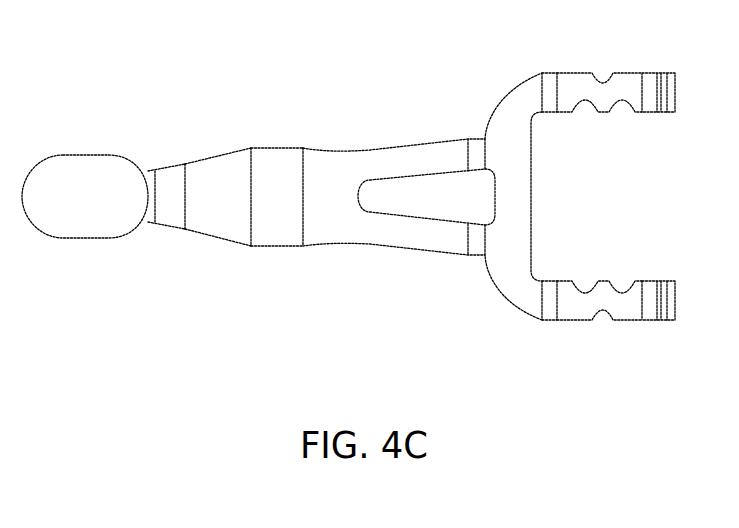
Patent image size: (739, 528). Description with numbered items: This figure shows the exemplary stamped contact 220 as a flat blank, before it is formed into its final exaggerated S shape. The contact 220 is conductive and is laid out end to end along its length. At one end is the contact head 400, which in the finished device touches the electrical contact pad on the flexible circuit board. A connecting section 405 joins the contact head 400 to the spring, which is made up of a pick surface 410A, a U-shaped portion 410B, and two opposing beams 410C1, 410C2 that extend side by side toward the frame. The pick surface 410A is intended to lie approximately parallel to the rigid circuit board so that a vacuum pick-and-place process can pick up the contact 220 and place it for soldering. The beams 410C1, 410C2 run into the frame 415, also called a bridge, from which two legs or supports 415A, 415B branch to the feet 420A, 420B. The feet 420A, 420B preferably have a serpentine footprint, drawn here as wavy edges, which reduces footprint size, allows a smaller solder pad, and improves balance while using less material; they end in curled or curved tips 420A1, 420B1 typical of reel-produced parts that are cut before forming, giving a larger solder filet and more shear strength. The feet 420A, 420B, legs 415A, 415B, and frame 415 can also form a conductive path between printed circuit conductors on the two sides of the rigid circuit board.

The contact 220 is at (207, 38).
The contact head 400 is at (103, 208).
The connecting section 405 is at (177, 165).
The pick surface 410A is at (238, 206).
The U-shaped portion 410B is at (299, 206).
The beam 410C1 is at (417, 140).
The beam 410C2 is at (417, 247).
The frame 415 is at (522, 251).
The leg 415A is at (550, 67).
The leg 415B is at (552, 317).
The foot 420A is at (635, 70).
The tip 420A1 is at (675, 66).
The foot 420B is at (630, 323).
The tip 420B1 is at (675, 328).